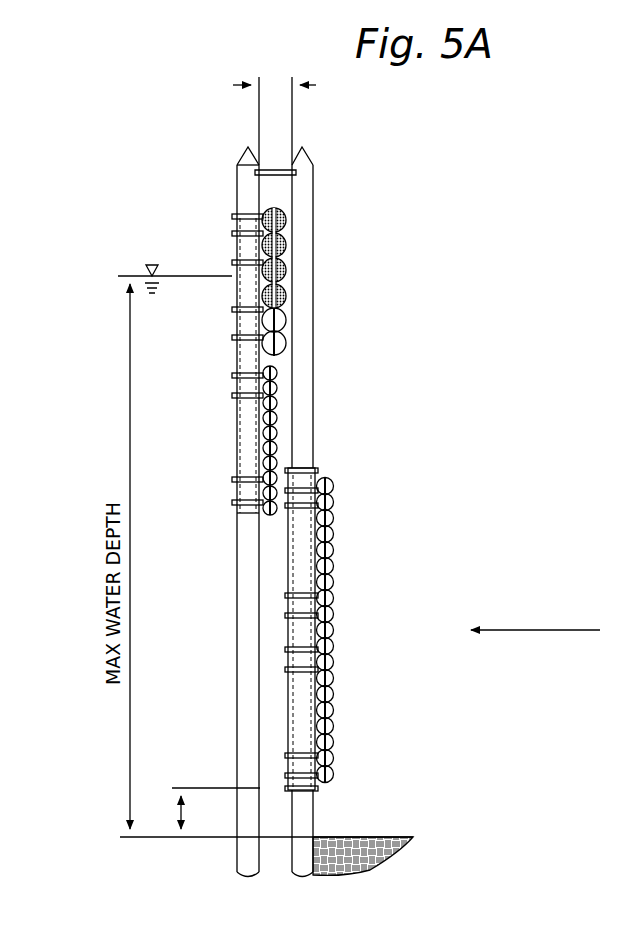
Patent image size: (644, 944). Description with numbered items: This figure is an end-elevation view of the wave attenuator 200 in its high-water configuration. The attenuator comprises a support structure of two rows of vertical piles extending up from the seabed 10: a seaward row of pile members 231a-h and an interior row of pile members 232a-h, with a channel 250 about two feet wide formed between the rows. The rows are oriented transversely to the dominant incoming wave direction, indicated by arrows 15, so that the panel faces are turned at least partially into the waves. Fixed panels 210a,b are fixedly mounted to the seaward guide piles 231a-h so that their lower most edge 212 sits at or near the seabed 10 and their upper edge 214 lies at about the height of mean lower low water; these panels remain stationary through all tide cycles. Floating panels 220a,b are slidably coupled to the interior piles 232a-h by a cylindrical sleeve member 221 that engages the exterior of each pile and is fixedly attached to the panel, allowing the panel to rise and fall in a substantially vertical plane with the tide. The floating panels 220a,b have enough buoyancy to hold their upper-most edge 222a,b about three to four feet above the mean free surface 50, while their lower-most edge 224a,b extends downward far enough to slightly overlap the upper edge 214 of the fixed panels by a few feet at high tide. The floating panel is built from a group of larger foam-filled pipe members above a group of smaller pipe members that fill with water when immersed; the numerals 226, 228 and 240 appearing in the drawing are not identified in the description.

The seabed 10 is at (213, 840).
The dominant incoming wave direction 15 is at (582, 629).
The mean free surface 50 is at (140, 275).
The wave attenuator 200 is at (158, 194).
The fixed panels 210a,b is at (356, 638).
The lower most edge 212 is at (333, 785).
The upper edge 214 is at (333, 470).
The floating panels 220a,b is at (290, 371).
The cylindrical sleeve member 221 is at (236, 358).
The upper-most edge 222a,b is at (286, 216).
The lower-most edge 224a,b is at (268, 518).
The float 226 is at (294, 264).
The float 228 is at (290, 411).
The pile members 231a-h is at (314, 168).
The pile members 232a-h is at (237, 192).
The pile embedment depth 240 is at (180, 810).
The channel 250 is at (276, 82).